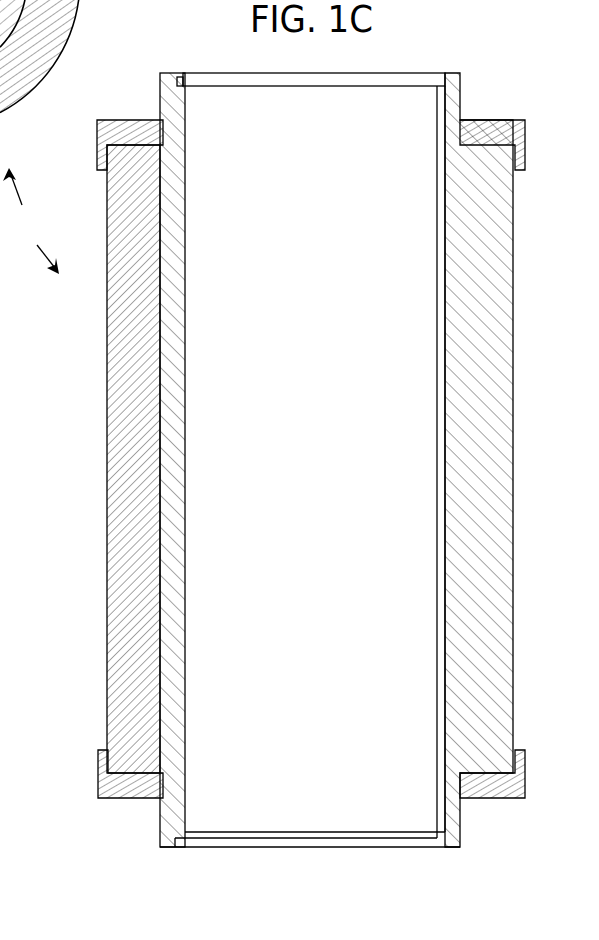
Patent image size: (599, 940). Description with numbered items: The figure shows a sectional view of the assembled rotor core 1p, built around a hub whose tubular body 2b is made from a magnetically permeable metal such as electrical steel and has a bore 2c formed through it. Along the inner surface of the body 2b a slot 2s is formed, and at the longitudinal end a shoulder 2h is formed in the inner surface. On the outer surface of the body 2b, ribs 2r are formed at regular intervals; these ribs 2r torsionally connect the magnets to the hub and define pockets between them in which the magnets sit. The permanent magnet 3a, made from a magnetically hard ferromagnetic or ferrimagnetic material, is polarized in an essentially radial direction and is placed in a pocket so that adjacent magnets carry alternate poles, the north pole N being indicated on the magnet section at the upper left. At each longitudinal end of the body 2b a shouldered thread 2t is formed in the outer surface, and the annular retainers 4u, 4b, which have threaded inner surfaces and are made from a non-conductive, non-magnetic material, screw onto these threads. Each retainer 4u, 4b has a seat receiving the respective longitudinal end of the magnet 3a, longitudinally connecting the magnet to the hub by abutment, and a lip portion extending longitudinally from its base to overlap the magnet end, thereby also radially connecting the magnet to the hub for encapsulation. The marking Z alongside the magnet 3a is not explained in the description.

The rotor core 1p is at (31, 221).
The tubular body 2b is at (185, 224).
The bore 2c is at (327, 433).
The shoulder 2h is at (180, 78).
The rib 2r is at (481, 551).
The slot 2s is at (437, 317).
The shouldered thread 2t is at (462, 98).
The permanent magnet 3a is at (107, 527).
The upper retainer 4u is at (123, 119).
The lower retainer 4b is at (98, 780).
The north pole N is at (39, 56).
The Z axis Z is at (128, 446).